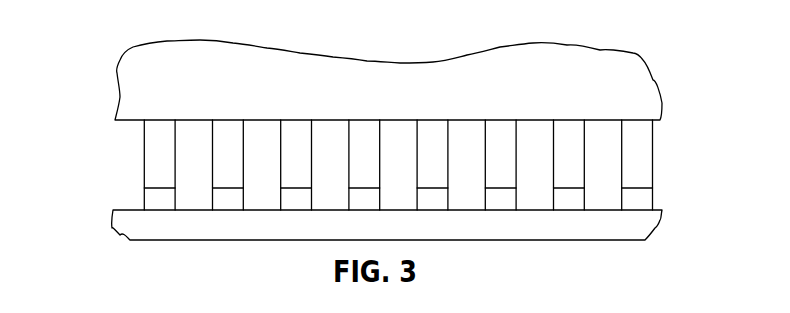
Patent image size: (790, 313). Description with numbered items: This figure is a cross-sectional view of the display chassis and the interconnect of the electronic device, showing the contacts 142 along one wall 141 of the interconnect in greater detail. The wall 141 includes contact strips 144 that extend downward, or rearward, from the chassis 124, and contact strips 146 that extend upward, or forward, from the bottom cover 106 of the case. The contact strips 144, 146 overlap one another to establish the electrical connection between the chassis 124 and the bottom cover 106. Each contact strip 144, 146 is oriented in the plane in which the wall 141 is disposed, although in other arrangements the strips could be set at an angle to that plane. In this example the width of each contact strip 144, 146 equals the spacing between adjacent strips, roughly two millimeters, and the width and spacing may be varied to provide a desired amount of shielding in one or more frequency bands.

The chassis 124 is at (392, 95).
The bottom cover 106 is at (392, 234).
The wall 141 is at (380, 172).
The contacts 142 is at (140, 125).
The contact strips 144 is at (655, 133).
The contact strips 146 is at (655, 190).